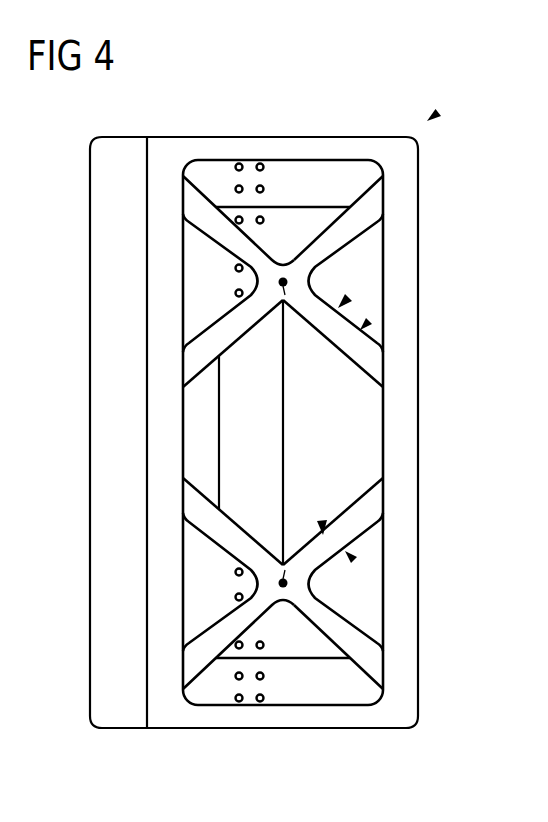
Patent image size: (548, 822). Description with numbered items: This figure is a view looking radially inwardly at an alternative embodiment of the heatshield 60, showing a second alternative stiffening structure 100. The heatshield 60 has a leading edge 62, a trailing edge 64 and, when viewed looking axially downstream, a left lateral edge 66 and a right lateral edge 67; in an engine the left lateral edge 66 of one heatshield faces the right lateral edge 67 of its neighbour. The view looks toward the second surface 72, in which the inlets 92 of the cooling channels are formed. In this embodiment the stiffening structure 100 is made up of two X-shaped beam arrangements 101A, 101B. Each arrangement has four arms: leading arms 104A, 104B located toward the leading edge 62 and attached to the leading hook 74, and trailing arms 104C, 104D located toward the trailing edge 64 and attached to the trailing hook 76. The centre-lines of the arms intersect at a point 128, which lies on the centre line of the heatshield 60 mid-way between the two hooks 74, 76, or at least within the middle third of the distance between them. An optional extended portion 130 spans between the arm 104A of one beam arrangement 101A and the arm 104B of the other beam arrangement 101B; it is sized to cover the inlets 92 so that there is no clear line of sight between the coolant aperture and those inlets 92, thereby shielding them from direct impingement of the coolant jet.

The heatshield 60 is at (438, 113).
The leading edge 62 is at (87, 660).
The trailing edge 64 is at (420, 655).
The left lateral edge 66 is at (208, 137).
The right lateral edge 67 is at (312, 730).
The second surface 72 is at (363, 418).
The leading hook 74 is at (165, 693).
The trailing hook 76 is at (410, 608).
The inlet 92 is at (260, 160).
The stiffening structure 100 is at (369, 321).
The beam arrangement 101A is at (349, 297).
The beam arrangement 101B is at (321, 520).
The leading arm 104A is at (208, 345).
The leading arm 104B is at (210, 227).
The trailing arm 104C is at (375, 204).
The trailing arm 104D is at (373, 360).
The point 128 is at (281, 303).
The extended portion 130 is at (275, 400).